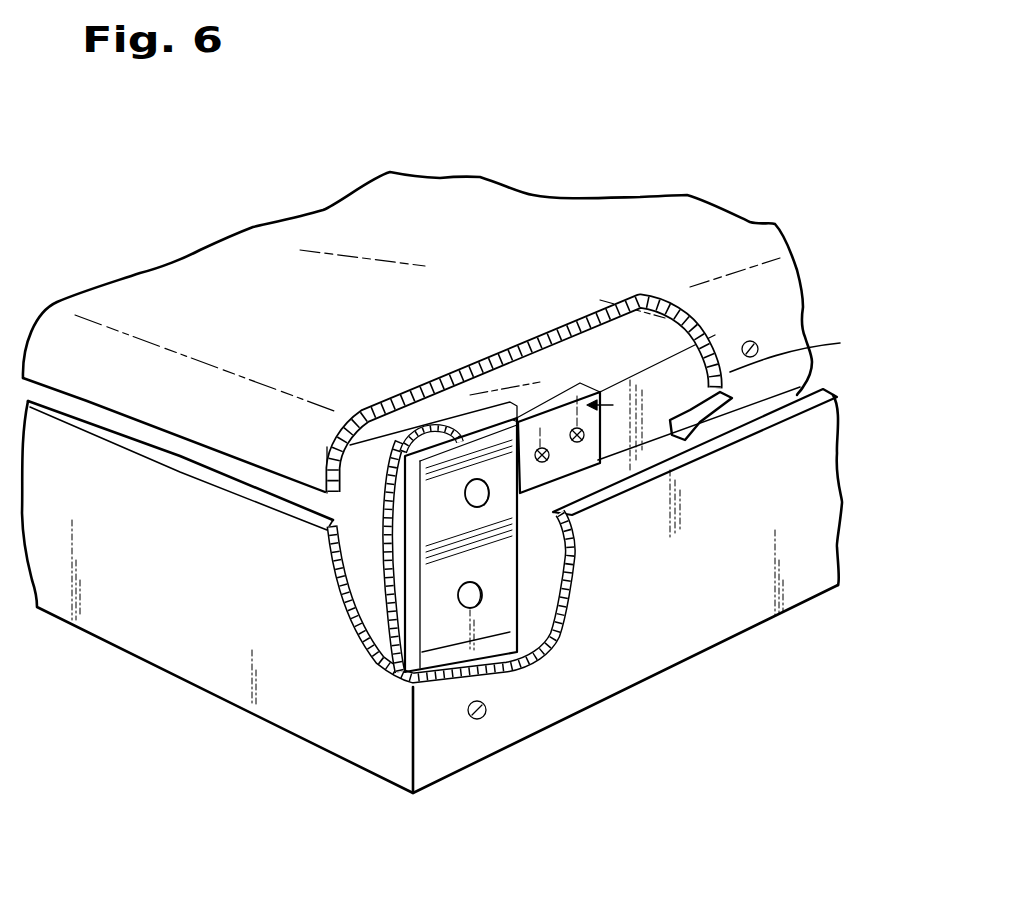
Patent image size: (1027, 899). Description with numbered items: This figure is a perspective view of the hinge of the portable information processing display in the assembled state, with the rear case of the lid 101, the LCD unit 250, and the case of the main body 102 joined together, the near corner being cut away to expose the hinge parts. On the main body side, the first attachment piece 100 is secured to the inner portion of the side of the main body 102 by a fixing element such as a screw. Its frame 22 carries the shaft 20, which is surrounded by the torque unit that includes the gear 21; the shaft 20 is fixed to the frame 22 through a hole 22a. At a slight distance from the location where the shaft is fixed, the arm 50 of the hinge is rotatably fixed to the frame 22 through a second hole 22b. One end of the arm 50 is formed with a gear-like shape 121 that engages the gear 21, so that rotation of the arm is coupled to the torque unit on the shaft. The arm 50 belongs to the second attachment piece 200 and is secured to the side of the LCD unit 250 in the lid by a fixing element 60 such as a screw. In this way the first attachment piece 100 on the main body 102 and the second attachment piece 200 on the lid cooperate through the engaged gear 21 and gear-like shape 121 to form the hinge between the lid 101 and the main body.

The lid 101 is at (405, 190).
The LCD unit 250 is at (640, 330).
The arm 50 is at (540, 398).
The fixing element 60 is at (547, 397).
The second attachment piece 200 is at (807, 347).
The main body 102 is at (128, 603).
The first attachment piece 100 is at (447, 687).
The gear-like shape 121 is at (335, 575).
The gear 21 is at (380, 633).
The shaft 20 is at (483, 600).
The frame 22 is at (483, 657).
The hole 22a is at (467, 623).
The hole 22b is at (488, 500).